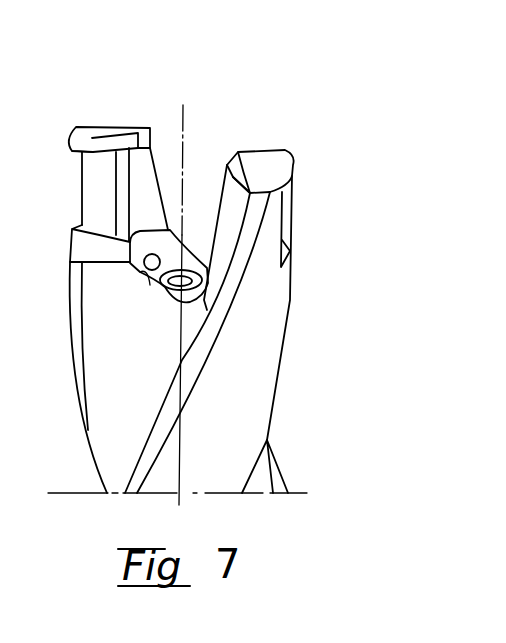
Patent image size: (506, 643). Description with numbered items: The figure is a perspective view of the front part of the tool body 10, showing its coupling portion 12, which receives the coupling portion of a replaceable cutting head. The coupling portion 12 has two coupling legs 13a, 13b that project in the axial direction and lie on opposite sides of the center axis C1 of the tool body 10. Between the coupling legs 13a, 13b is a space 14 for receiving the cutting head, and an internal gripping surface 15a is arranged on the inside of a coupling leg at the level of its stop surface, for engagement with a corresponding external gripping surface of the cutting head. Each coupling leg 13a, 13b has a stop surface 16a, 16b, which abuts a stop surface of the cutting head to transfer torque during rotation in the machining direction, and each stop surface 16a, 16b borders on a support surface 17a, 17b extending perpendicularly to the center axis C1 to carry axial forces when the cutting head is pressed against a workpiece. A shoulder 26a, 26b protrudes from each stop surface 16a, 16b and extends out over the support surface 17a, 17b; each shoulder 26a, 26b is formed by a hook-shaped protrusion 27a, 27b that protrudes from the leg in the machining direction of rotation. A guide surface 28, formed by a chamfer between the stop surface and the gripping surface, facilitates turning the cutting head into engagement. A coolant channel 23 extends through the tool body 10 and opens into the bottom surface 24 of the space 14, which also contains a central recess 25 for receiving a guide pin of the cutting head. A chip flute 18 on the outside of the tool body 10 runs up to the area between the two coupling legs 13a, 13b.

The tool body 10 is at (267, 423).
The coupling portion 12 is at (305, 278).
The coupling leg 13a is at (145, 126).
The coupling leg 13b is at (240, 150).
The space 14 is at (200, 185).
The internal gripping surface 15a is at (150, 173).
The stop surface 16a is at (93, 183).
The stop surface 16b is at (284, 208).
The support surface 17a is at (82, 248).
The support surface 17b is at (288, 247).
The chip flute 18 is at (102, 432).
The coolant channel 23 is at (144, 264).
The bottom surface 24 is at (153, 288).
The central recess 25 is at (160, 300).
The shoulder 26a is at (88, 153).
The shoulder 26b is at (290, 180).
The hook-shaped protrusion 27a is at (91, 134).
The hook-shaped protrusion 27b is at (285, 150).
The guide surface 28 is at (120, 203).
The center axis C1 is at (179, 457).